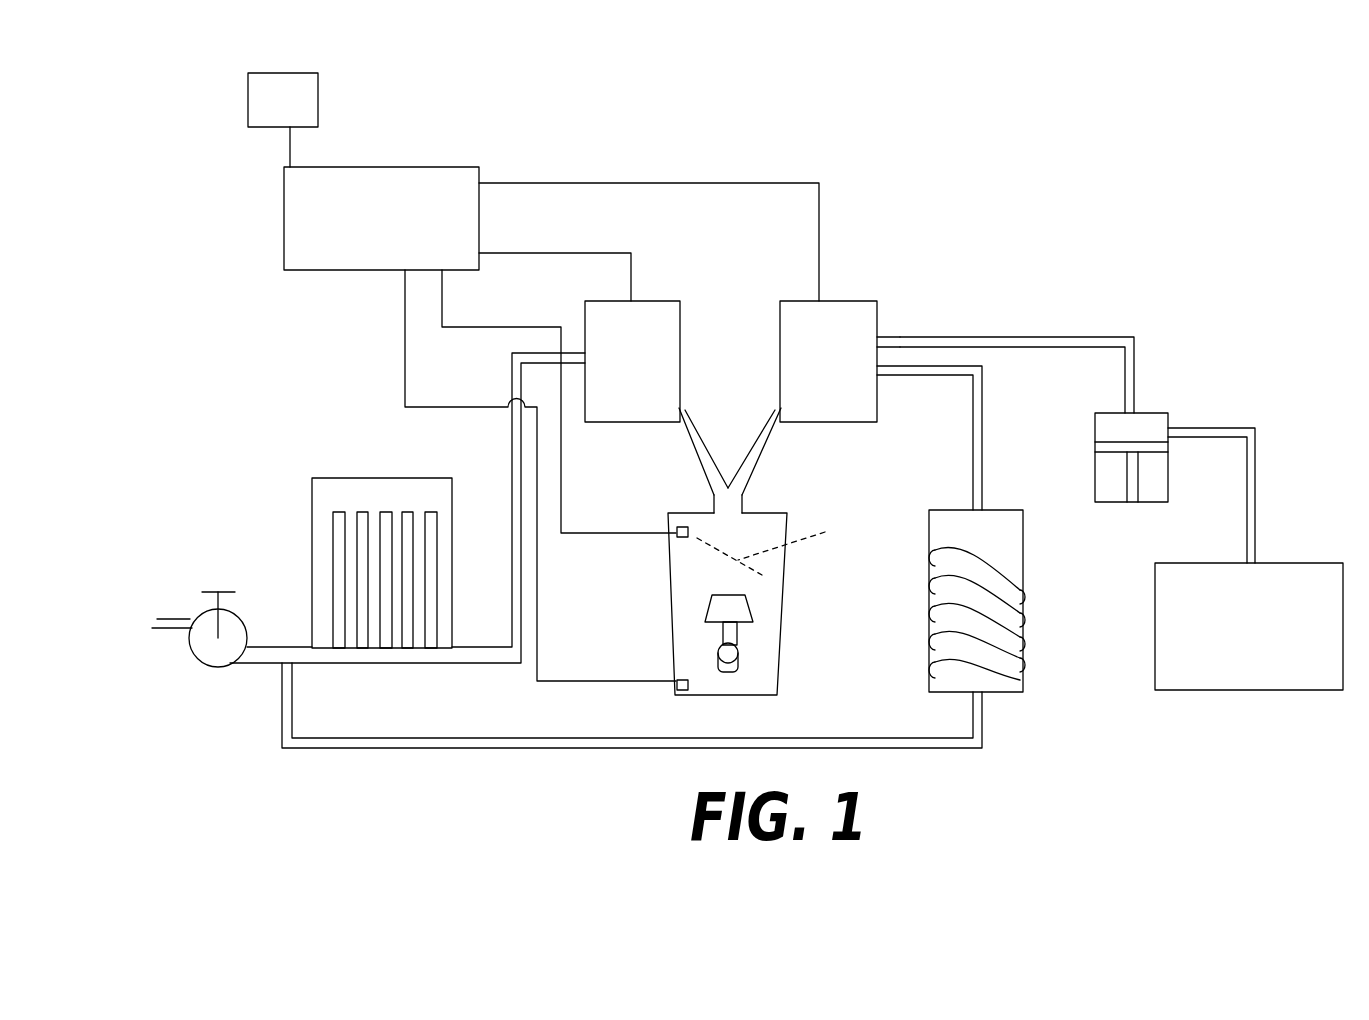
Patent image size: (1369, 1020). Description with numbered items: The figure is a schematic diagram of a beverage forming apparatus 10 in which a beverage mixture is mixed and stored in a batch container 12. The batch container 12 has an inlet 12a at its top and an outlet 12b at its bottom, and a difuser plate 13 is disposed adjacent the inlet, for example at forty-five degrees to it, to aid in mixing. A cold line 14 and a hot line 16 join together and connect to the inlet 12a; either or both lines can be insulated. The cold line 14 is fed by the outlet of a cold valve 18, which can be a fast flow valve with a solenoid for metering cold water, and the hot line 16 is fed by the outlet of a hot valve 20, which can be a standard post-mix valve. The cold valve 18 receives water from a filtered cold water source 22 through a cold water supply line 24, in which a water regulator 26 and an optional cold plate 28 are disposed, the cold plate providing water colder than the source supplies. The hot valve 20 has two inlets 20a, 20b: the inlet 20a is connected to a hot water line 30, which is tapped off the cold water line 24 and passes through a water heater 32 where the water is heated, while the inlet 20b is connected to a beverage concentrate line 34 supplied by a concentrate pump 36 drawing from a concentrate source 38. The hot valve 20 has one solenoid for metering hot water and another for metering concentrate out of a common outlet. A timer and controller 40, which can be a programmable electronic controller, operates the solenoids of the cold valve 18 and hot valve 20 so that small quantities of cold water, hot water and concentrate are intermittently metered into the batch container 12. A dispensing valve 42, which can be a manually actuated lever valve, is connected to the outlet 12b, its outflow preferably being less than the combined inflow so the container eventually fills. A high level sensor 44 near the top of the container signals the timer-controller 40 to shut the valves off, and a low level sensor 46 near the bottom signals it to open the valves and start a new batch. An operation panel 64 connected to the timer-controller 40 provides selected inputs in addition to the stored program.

The beverage forming apparatus 10 is at (240, 212).
The batch container 12 is at (668, 585).
The inlet 12a is at (760, 513).
The outlet 12b is at (739, 652).
The difuser plate 13 is at (775, 544).
The cold line 14 is at (669, 443).
The hot line 16 is at (775, 433).
The cold valve 18 is at (653, 300).
The hot valve 20 is at (877, 397).
The inlet 20a is at (879, 373).
The inlet 20b is at (878, 332).
The filtered cold water source 22 is at (152, 626).
The cold water supply line 24 is at (513, 475).
The water regulator 26 is at (248, 626).
The cold plate 28 is at (365, 478).
The hot water line 30 is at (982, 497).
The water heater 32 is at (1028, 597).
The beverage concentrate line 34 is at (1030, 337).
The concentrate pump 36 is at (1148, 413).
The concentrate source 38 is at (1320, 563).
The timer and controller 40 is at (310, 270).
The dispensing valve 42 is at (718, 670).
The high level sensor 44 is at (676, 530).
The low level sensor 46 is at (676, 690).
The operation panel 64 is at (318, 100).